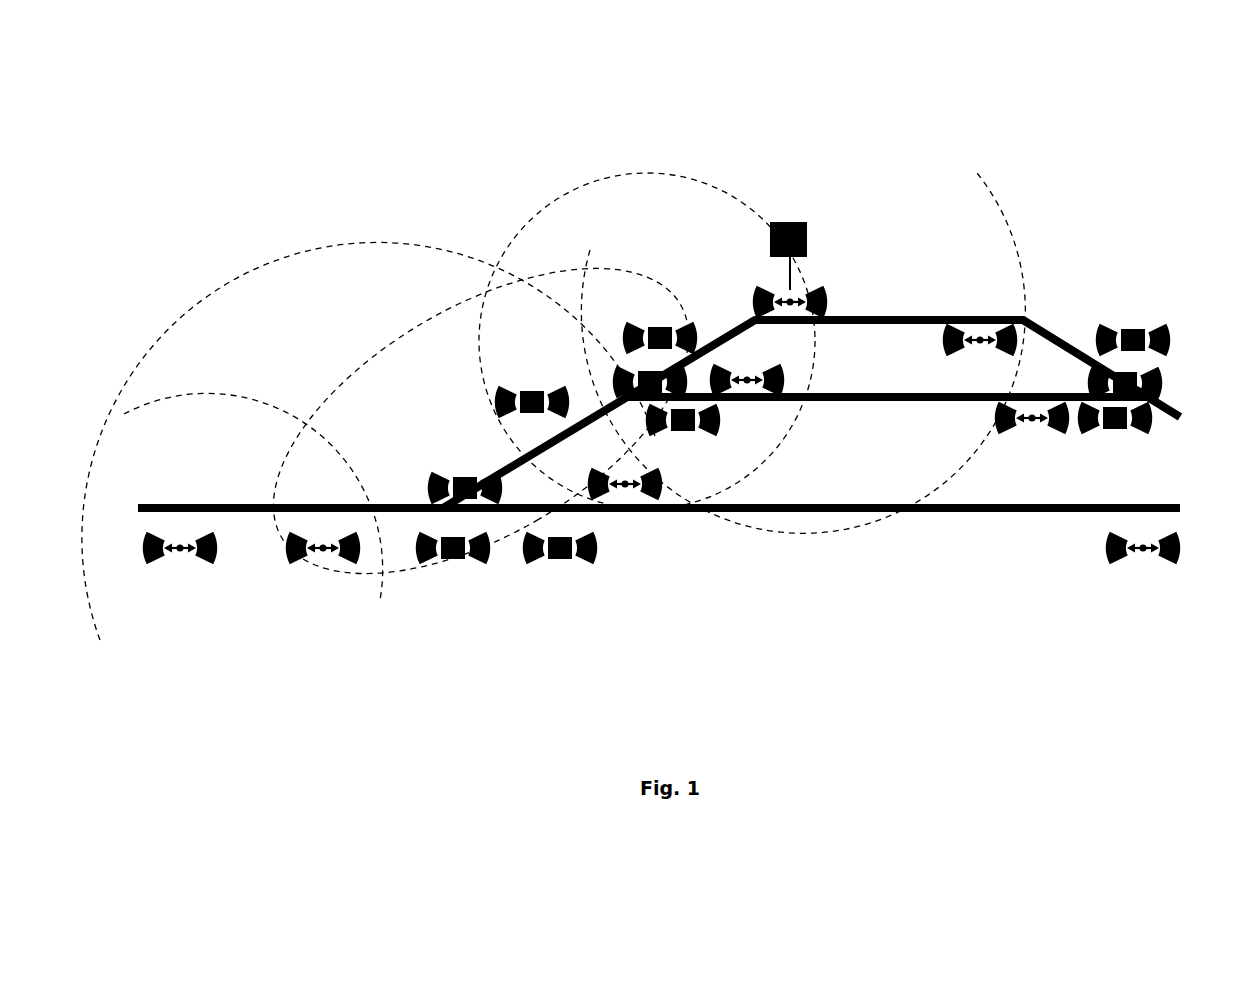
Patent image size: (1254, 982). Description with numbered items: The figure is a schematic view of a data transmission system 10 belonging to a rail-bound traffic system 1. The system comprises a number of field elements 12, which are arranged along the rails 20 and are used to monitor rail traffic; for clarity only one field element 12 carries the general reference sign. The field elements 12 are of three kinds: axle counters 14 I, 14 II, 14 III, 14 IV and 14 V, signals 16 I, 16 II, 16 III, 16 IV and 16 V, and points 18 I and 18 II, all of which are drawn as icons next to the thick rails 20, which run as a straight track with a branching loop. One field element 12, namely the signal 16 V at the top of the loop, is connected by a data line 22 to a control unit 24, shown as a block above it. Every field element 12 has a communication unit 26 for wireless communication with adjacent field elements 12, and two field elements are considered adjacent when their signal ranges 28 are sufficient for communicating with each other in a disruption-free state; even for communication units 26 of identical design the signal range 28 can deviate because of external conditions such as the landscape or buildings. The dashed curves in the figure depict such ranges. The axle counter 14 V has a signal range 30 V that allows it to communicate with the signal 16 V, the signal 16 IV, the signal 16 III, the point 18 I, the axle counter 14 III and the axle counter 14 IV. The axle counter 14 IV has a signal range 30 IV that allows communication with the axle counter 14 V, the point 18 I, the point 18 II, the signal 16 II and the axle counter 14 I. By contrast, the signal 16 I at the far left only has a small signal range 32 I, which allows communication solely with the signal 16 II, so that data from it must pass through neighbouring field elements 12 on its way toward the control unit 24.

The data transmission system 10 is at (669, 387).
The rail-bound traffic system 1 is at (659, 409).
The field element 12 is at (1040, 443).
The rails 20 is at (905, 345).
The data line 22 is at (773, 223).
The control unit 24 is at (796, 208).
The communication unit 26 is at (1128, 577).
The signal range 28 is at (223, 385).
The signal range of axle counter 14 IV 30 IV is at (463, 277).
The signal range of axle counter 14 V 30 V is at (680, 168).
The signal range of signal 16 I 32 I is at (300, 402).
The axle counter 14 I is at (453, 575).
The axle counter 14 II is at (560, 572).
The axle counter 14 III is at (702, 448).
The axle counter 14 IV is at (530, 377).
The axle counter 14 V is at (650, 310).
The signal 16 I is at (187, 566).
The signal 16 II is at (321, 568).
The signal 16 III is at (630, 502).
The signal 16 IV is at (758, 415).
The signal 16 V is at (820, 274).
The point 18 I is at (622, 372).
The point 18 II is at (435, 468).